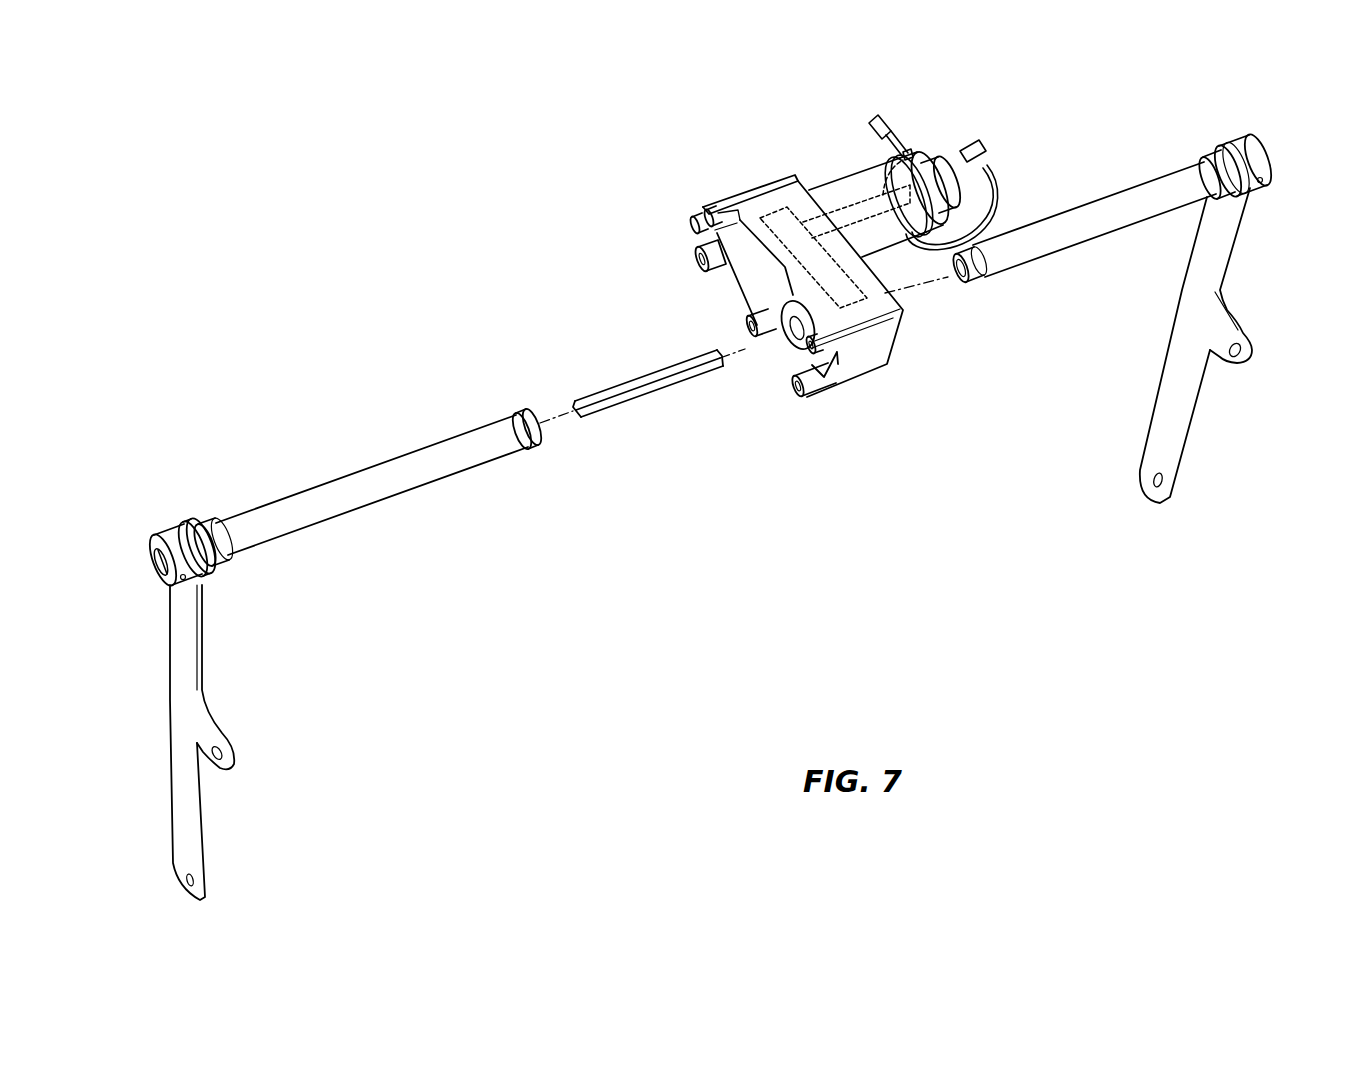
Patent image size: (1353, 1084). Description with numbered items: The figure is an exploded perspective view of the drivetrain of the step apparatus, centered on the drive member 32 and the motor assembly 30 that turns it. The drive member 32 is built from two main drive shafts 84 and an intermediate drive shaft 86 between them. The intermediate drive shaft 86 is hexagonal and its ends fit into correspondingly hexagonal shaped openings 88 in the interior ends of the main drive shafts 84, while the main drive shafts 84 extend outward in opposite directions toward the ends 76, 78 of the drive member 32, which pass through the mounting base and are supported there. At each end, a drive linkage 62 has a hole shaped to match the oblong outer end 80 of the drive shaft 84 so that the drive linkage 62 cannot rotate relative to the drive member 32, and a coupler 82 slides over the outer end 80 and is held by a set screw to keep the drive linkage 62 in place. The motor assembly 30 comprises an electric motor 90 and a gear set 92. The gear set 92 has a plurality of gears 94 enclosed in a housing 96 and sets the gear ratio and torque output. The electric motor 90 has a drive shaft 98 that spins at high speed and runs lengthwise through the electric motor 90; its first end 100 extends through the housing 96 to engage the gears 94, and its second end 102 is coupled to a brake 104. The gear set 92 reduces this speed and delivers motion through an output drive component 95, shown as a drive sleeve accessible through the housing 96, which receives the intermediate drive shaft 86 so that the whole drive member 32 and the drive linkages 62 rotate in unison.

The motor assembly 30 is at (841, 166).
The drive member 32 is at (430, 447).
The drive linkage 62 is at (178, 670).
The end of the drive member 76 is at (1276, 161).
The end of the drive member 78 is at (140, 546).
The outer end of the drive shaft 80 is at (158, 570).
The coupler 82 is at (158, 528).
The main drive shaft 84 is at (325, 497).
The intermediate drive shaft 86 is at (633, 380).
The hexagonal shaped opening 88 is at (957, 285).
The electric motor 90 is at (860, 180).
The gear set 92 is at (724, 172).
The gears 94 is at (865, 320).
The output drive component 95 is at (788, 345).
The housing 96 is at (693, 272).
The drive shaft 98 is at (897, 157).
The first end 100 is at (800, 217).
The second end 102 is at (936, 152).
The brake 104 is at (950, 190).